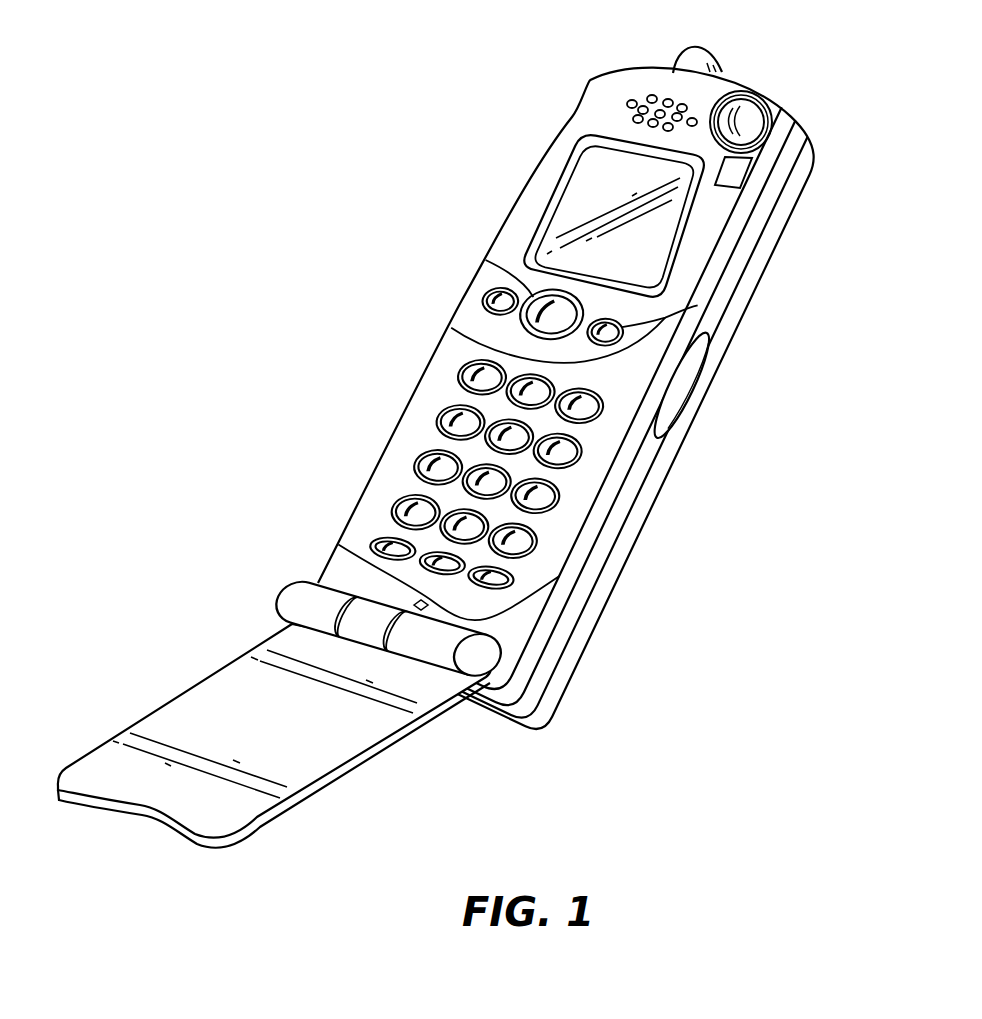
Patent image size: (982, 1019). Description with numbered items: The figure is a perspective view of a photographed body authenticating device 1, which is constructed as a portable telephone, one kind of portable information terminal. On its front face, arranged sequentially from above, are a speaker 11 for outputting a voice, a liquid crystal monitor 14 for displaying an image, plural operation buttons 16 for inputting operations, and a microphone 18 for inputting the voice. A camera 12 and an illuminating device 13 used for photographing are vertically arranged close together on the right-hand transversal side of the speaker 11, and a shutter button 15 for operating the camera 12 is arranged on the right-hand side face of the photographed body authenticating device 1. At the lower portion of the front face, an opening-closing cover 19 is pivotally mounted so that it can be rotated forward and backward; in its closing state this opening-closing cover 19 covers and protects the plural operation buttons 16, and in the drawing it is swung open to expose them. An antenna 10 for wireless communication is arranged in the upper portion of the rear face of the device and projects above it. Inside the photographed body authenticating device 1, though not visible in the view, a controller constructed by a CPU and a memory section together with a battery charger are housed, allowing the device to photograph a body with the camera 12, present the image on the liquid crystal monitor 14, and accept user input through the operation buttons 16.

The photographed body authenticating device 1 is at (464, 429).
The antenna 10 is at (706, 48).
The speaker 11 is at (628, 104).
The camera 12 is at (752, 122).
The illuminating device 13 is at (737, 173).
The liquid crystal monitor 14 is at (650, 223).
The shutter button 15 is at (687, 385).
The operation buttons 16 is at (493, 293).
The microphone 18 is at (417, 604).
The opening-closing cover 19 is at (210, 703).